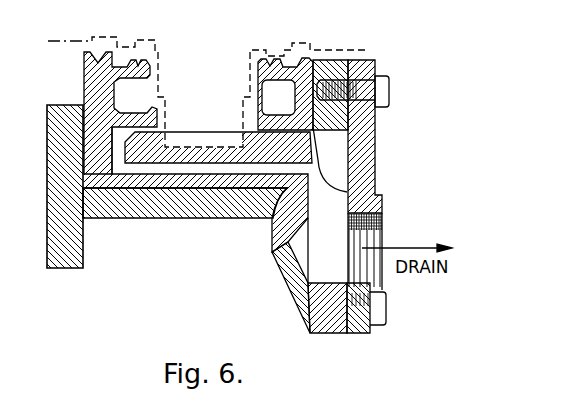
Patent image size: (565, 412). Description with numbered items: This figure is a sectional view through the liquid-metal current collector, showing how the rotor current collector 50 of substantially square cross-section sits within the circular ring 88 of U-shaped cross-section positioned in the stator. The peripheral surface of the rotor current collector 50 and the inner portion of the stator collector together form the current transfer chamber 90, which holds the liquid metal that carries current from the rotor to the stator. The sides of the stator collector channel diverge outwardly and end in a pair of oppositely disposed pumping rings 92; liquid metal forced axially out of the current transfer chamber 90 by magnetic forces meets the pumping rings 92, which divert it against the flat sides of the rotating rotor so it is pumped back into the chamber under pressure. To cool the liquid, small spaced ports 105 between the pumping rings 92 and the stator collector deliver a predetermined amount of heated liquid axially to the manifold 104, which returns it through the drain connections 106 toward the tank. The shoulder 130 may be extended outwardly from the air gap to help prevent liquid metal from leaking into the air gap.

The rotor current collector 50 is at (236, 59).
The circular ring 88 is at (321, 80).
The current transfer chamber 90 is at (213, 152).
The pumping rings 92 is at (242, 134).
The manifold 104 is at (340, 153).
The ports 105 is at (152, 131).
The drain connections 106 is at (372, 236).
The shoulder 130 is at (150, 79).